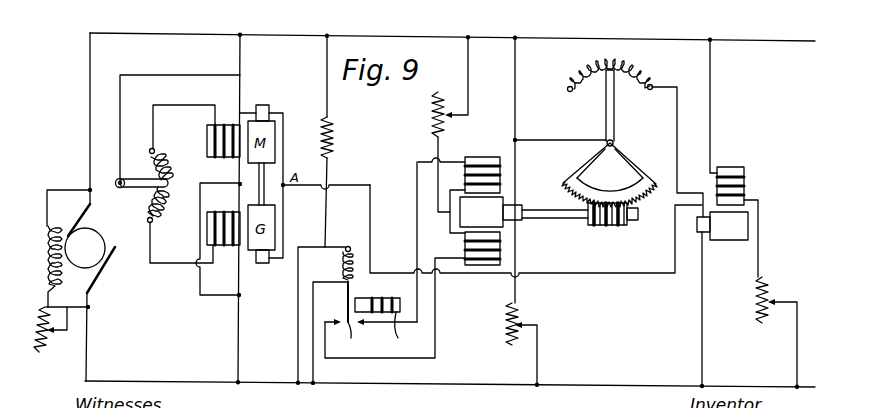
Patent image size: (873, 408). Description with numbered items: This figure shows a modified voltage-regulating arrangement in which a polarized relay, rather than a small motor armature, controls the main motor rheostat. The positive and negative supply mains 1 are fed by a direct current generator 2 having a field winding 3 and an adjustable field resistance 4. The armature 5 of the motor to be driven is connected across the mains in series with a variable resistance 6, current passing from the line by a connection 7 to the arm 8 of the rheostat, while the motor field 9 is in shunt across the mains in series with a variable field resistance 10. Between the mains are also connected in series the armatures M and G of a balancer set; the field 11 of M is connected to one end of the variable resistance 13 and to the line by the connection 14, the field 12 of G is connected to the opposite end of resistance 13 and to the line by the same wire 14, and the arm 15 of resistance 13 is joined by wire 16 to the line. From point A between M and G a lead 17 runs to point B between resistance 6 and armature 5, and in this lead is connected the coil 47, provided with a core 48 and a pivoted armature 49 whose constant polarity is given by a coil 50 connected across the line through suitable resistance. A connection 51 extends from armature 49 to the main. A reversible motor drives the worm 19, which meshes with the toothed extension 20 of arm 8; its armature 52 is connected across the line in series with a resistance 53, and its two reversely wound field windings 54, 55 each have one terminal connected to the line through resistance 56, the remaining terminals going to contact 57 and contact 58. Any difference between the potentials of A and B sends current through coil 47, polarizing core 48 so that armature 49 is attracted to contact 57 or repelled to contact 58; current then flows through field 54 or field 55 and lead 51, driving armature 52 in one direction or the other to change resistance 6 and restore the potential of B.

The supply main 1 is at (285, 41).
The direct current generator 2 is at (90, 285).
The field winding 3 is at (48, 266).
The adjustable field resistance 4 is at (61, 334).
The armature 5 is at (715, 222).
The variable resistance 6 is at (643, 73).
The connection 7 is at (514, 100).
The arm 8 is at (612, 118).
The field 9 is at (745, 185).
The variable field resistance 10 is at (766, 332).
The field 11 is at (206, 135).
The field 12 is at (206, 232).
The variable resistance 13 is at (179, 179).
The connection 14 is at (196, 288).
The arm 15 is at (150, 191).
The wire 16 is at (124, 95).
The lead 17 is at (369, 213).
The worm 19 is at (604, 227).
The toothed extension 20 is at (607, 196).
The coil 47 is at (381, 297).
The core 48 is at (405, 330).
The pivoted armature 49 is at (347, 298).
The coil 50 is at (340, 268).
The connection 51 is at (296, 296).
The armature 52 is at (491, 212).
The resistance 53 is at (506, 330).
The field winding 54 is at (477, 166).
The field winding 55 is at (464, 247).
The resistance 56 is at (432, 118).
The contact 57 is at (387, 330).
The contact 58 is at (336, 330).